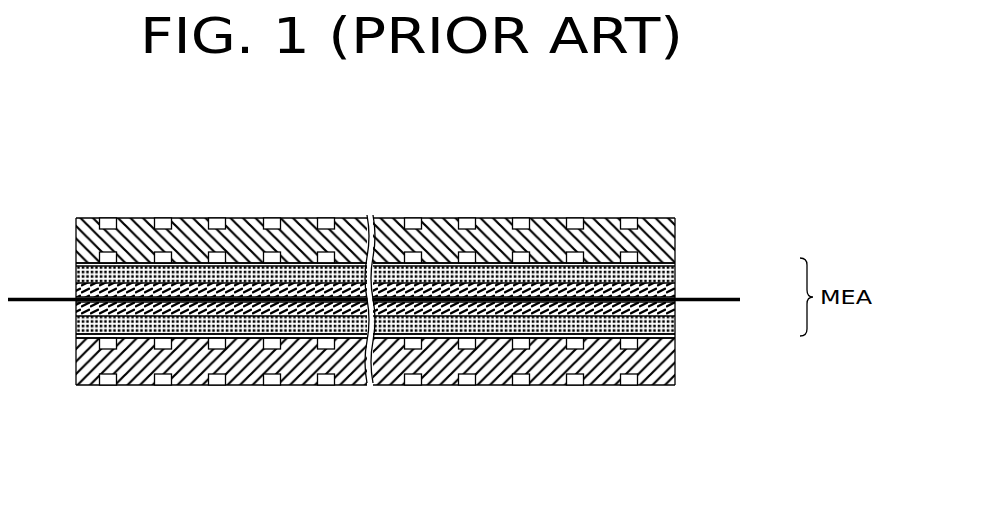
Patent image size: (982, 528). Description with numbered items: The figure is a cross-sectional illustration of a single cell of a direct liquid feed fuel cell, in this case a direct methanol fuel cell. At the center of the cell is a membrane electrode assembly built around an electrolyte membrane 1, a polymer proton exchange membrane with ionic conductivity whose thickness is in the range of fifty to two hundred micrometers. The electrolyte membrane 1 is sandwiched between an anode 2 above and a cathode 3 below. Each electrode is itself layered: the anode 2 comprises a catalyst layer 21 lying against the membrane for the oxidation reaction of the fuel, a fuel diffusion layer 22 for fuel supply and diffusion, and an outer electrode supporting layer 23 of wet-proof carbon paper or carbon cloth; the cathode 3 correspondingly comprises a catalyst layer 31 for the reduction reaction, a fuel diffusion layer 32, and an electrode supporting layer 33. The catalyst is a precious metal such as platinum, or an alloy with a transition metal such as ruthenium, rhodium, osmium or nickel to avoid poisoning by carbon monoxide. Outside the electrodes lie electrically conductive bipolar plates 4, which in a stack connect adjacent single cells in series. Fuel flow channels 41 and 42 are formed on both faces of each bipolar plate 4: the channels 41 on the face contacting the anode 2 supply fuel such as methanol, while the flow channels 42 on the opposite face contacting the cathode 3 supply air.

The electrolyte membrane 1 is at (742, 299).
The anode 2 is at (423, 259).
The catalyst layer 21 is at (675, 292).
The fuel diffusion layer 22 is at (675, 275).
The electrode supporting layer 23 is at (675, 256).
The cathode 3 is at (423, 336).
The catalyst layer 31 is at (675, 308).
The fuel diffusion layer 32 is at (675, 324).
The electrode supporting layer 33 is at (675, 338).
The bipolar plate 4 is at (402, 301).
The fuel flow channel 41 is at (161, 256).
The air flow channel 42 is at (108, 222).